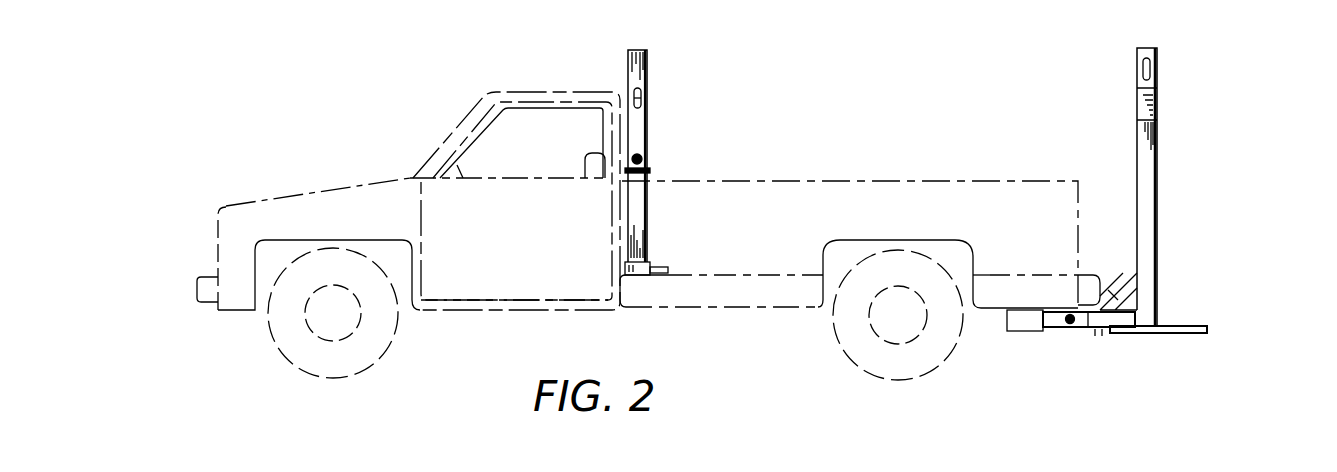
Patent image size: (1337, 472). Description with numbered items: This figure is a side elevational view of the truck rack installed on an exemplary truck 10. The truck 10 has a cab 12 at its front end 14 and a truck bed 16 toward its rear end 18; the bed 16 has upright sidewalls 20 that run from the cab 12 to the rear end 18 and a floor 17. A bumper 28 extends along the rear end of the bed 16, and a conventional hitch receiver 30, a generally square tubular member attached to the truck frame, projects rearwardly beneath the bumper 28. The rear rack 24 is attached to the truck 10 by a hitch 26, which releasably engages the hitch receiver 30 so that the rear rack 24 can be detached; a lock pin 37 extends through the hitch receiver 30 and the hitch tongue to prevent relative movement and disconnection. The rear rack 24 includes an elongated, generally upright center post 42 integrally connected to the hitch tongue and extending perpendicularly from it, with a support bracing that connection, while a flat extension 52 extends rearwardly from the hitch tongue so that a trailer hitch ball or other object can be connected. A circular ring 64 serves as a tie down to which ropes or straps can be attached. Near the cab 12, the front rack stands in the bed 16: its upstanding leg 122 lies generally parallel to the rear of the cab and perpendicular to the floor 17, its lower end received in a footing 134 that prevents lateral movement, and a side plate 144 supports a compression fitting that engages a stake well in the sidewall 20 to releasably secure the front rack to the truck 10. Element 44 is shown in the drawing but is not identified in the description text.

The truck 10 is at (283, 160).
The cab 12 is at (528, 78).
The front end 14 is at (600, 321).
The truck bed 16 is at (848, 172).
The floor 17 is at (990, 275).
The rear end 18 is at (1093, 162).
The sidewalls 20 is at (806, 239).
The rear rack 24 is at (1170, 52).
The hitch 26 is at (1028, 340).
The bumper 28 is at (1097, 283).
The hitch receiver 30 is at (1005, 325).
The lock pin 37 is at (1070, 330).
The center post 42 is at (1160, 212).
The horizontal tube 44 is at (1097, 330).
The extension 52 is at (1190, 335).
The circular ring 64 is at (1140, 70).
The leg 122 is at (640, 78).
The footing 134 is at (672, 273).
The side plate 144 is at (648, 170).